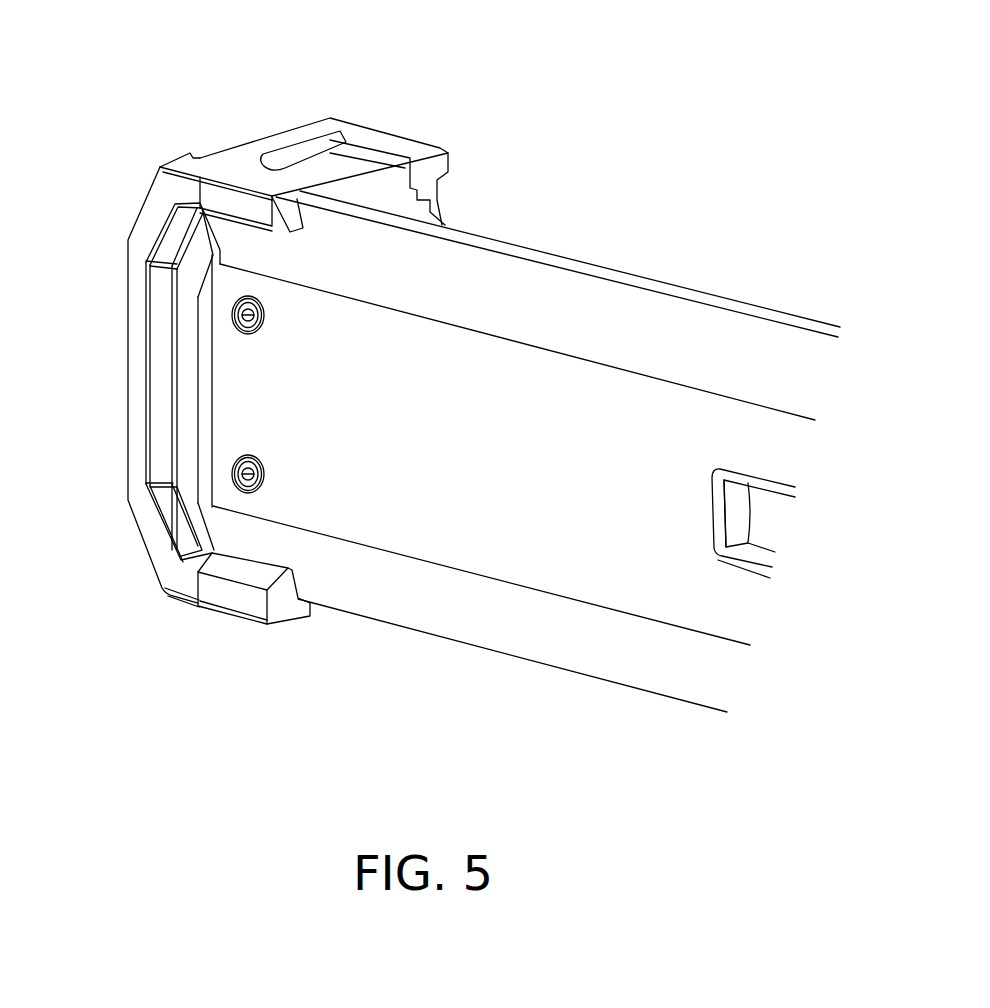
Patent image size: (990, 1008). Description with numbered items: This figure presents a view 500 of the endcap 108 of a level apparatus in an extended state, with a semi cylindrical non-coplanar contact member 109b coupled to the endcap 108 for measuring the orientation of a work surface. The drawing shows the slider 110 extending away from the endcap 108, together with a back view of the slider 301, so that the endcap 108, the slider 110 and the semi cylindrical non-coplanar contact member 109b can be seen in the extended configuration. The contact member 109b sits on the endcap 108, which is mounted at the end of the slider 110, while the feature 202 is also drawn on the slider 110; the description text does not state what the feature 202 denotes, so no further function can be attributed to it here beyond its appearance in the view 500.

The view 500 is at (628, 72).
The endcap 108 is at (385, 133).
The semi cylindrical non-coplanar contact member 109b is at (298, 158).
The slider 110 is at (728, 300).
The back view of the slider 301 is at (594, 302).
The slot 202 is at (760, 516).